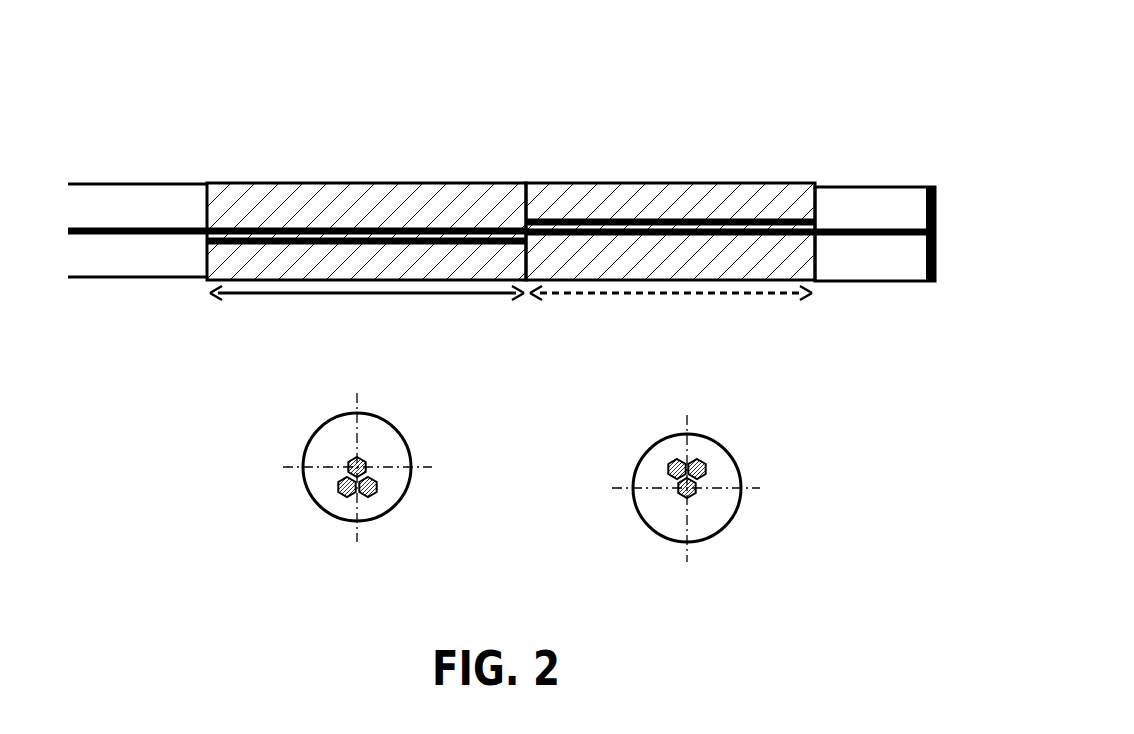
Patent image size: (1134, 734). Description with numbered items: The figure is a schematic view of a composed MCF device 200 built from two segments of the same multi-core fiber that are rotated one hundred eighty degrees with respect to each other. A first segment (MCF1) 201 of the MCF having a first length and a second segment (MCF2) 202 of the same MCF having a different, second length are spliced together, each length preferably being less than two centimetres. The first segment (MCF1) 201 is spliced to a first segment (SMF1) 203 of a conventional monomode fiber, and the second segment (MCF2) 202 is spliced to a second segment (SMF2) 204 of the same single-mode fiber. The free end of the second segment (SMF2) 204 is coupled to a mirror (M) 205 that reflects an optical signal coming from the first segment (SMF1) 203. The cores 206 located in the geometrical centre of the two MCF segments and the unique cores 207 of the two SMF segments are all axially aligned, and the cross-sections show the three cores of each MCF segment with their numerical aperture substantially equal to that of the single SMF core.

The composed MCF device 200 is at (580, 145).
The first segment (MCF1) of the MCF 201 is at (268, 183).
The second segment (MCF2) of the MCF 202 is at (752, 183).
The first segment (SMF1) of the SMF 203 is at (138, 183).
The second segment (SMF2) of the SMF 204 is at (833, 186).
The mirror (M) 205 is at (933, 257).
The cores 206 is at (478, 236).
The unique cores 207 is at (182, 235).